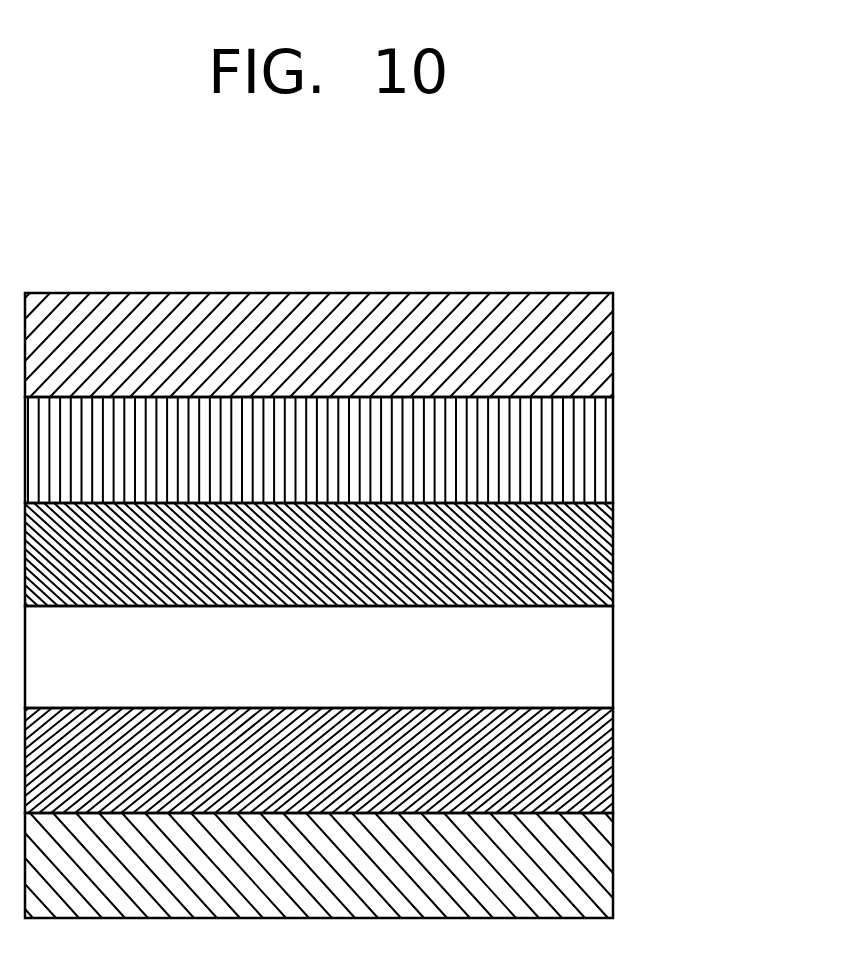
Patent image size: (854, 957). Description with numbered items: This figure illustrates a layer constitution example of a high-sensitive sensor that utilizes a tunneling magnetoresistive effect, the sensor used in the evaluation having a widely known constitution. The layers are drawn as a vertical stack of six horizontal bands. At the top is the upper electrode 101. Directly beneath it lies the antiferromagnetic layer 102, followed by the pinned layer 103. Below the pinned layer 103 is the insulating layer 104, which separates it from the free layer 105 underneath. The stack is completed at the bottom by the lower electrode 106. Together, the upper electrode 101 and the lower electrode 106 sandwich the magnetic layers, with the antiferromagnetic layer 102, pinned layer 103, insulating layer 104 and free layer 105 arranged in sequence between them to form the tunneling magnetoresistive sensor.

The upper electrode 101 is at (613, 353).
The antiferromagnetic layer 102 is at (613, 452).
The pinned layer 103 is at (613, 553).
The insulating layer 104 is at (613, 657).
The free layer 105 is at (613, 763).
The lower electrode 106 is at (613, 867).